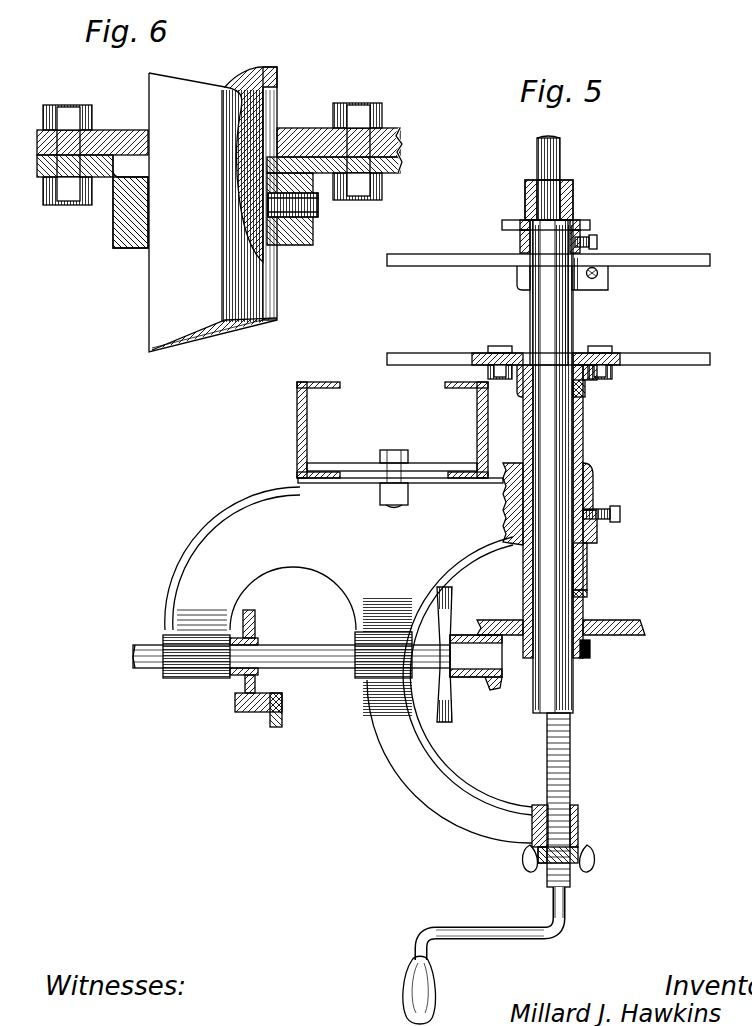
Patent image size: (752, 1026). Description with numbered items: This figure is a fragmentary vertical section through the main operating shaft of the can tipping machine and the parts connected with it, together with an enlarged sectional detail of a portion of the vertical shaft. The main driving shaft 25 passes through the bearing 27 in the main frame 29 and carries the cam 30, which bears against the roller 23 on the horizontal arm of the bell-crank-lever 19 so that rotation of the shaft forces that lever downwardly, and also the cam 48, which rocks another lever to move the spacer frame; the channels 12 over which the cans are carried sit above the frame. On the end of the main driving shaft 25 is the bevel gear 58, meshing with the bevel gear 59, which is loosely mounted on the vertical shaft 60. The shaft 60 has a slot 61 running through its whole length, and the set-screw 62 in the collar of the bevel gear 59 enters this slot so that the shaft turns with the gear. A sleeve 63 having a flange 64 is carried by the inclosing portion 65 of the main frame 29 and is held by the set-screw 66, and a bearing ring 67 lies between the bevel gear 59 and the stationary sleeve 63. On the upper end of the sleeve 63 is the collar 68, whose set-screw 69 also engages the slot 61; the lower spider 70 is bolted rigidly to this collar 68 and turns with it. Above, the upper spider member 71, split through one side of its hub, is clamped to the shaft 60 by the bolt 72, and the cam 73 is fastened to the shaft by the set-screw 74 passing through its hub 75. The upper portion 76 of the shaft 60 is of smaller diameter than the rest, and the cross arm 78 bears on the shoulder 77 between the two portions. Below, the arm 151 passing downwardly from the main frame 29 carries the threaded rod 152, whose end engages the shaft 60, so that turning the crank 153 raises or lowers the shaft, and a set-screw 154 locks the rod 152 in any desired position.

In FIG. 5, the channels 12 is at (478, 428).
In FIG. 5, the bell-crank-lever 19 is at (283, 723).
In FIG. 5, the roller 23 is at (245, 712).
In FIG. 5, the main driving shaft 25 is at (300, 638).
In FIG. 5, the bearing 27 is at (195, 679).
In FIG. 5, the main frame 29 is at (334, 583).
In FIG. 5, the cam 30 is at (256, 616).
In FIG. 5, the cam 48 is at (450, 722).
In FIG. 5, the bevel gear 58 is at (484, 690).
In FIG. 5, the bevel gear 59 is at (646, 630).
In FIG. 6, the shaft 60 is at (213, 212).
In FIG. 5, the shaft 60 is at (572, 685).
In FIG. 6, the slot 61 is at (277, 262).
In FIG. 5, the slot 61 is at (578, 320).
In FIG. 5, the set-screw 62 is at (592, 650).
In FIG. 5, the sleeve 63 is at (588, 560).
In FIG. 5, the flange 64 is at (596, 468).
In FIG. 5, the inclosing portion 65 is at (598, 496).
In FIG. 5, the set-screw 66 is at (622, 510).
In FIG. 5, the bearing ring 67 is at (588, 594).
In FIG. 6, the collar 68 is at (128, 177).
In FIG. 5, the collar 68 is at (597, 376).
In FIG. 6, the set-screw 69 is at (315, 215).
In FIG. 5, the set-screw 69 is at (586, 390).
In FIG. 6, the lower spider 70 is at (115, 130).
In FIG. 5, the lower spider 70 is at (624, 352).
In FIG. 5, the upper spider member 71 is at (673, 254).
In FIG. 5, the bolt 72 is at (597, 268).
In FIG. 5, the cam 73 is at (503, 224).
In FIG. 5, the set-screw 74 is at (593, 237).
In FIG. 5, the hub 75 is at (519, 242).
In FIG. 5, the upper portion 76 is at (561, 162).
In FIG. 5, the shoulder 77 is at (529, 215).
In FIG. 5, the cross arm 78 is at (527, 181).
In FIG. 5, the arm 151 is at (425, 805).
In FIG. 5, the threaded rod 152 is at (571, 770).
In FIG. 5, the crank 153 is at (430, 970).
In FIG. 5, the set-screw 154 is at (590, 855).